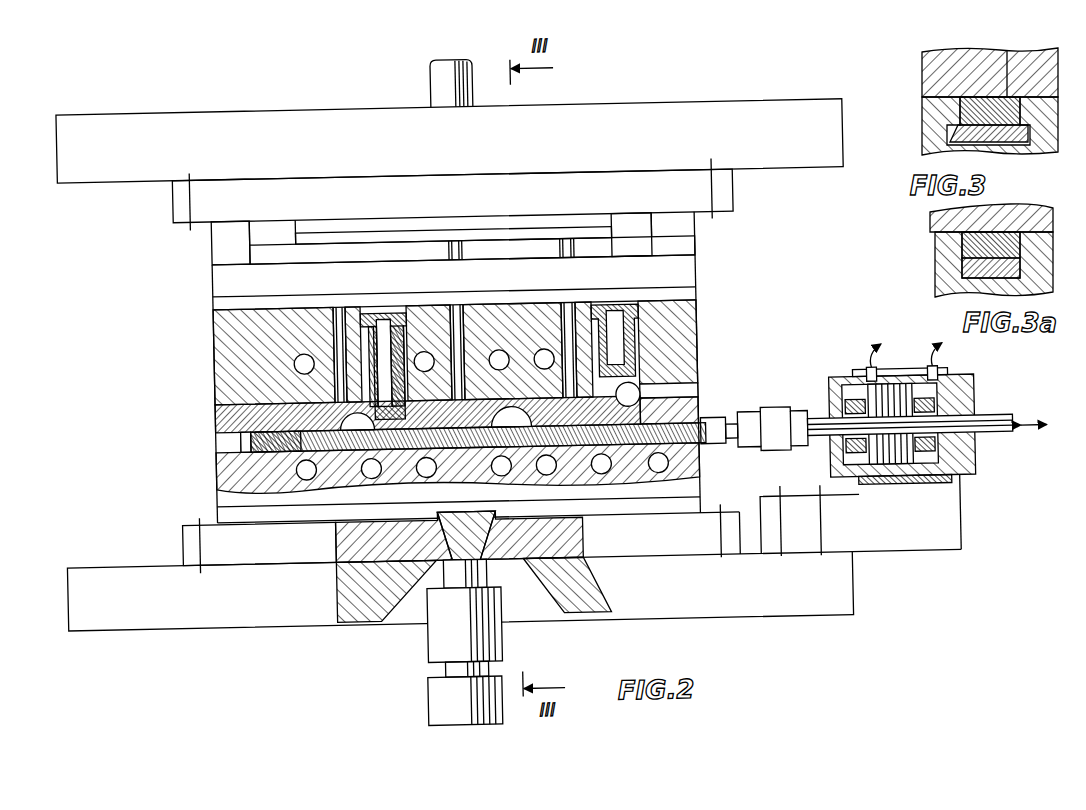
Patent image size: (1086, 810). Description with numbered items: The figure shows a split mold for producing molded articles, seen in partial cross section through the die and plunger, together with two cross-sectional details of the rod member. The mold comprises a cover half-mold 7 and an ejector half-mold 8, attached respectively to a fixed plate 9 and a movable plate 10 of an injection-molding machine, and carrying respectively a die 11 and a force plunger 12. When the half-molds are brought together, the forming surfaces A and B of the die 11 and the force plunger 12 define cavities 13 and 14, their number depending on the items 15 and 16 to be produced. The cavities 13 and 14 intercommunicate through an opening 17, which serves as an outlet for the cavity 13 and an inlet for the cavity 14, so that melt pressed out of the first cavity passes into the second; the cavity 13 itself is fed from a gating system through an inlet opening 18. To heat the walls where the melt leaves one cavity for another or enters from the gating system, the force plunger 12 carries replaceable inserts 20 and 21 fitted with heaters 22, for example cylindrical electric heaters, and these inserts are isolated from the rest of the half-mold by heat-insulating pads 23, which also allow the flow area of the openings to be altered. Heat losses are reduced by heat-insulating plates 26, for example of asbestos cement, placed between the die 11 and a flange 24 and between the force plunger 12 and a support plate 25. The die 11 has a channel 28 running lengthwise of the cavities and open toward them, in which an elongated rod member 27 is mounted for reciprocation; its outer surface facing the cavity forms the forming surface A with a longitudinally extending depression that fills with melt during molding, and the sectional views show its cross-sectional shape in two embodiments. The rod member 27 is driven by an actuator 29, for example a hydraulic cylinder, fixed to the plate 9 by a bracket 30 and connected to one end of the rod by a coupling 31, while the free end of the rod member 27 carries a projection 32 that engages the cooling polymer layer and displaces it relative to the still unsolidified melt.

In FIG. 2, the cover half-mold 7 is at (214, 505).
In FIG. 2, the ejector half-mold 8 is at (212, 216).
In FIG. 2, the fixed plate 9 is at (97, 578).
In FIG. 2, the movable plate 10 is at (218, 126).
In FIG. 2, the die 11 is at (250, 466).
In FIG. 3, the die 11 is at (930, 112).
In FIG. 3A, the die 11 is at (960, 287).
In FIG. 2, the force plunger 12 is at (231, 323).
In FIG. 3, the force plunger 12 is at (980, 65).
In FIG. 3A, the force plunger 12 is at (945, 225).
In FIG. 2, the cavity 13 is at (506, 401).
In FIG. 2, the cavity 14 is at (338, 478).
In FIG. 2, the item 15 is at (480, 396).
In FIG. 3, the item 15 is at (1000, 100).
In FIG. 3A, the item 15 is at (950, 248).
In FIG. 2, the item 16 is at (333, 393).
In FIG. 2, the opening 17 is at (376, 599).
In FIG. 2, the inlet opening 18 is at (631, 396).
In FIG. 2, the replaceable insert 20 is at (370, 316).
In FIG. 2, the replaceable insert 21 is at (672, 322).
In FIG. 2, the heater 22 is at (397, 311).
In FIG. 2, the heat-insulating pad 23 is at (426, 330).
In FIG. 2, the flange 24 is at (202, 550).
In FIG. 2, the support plate 25 is at (248, 274).
In FIG. 2, the heat-insulating plate 26 is at (698, 505).
In FIG. 2, the rod member 27 is at (704, 446).
In FIG. 3, the rod member 27 is at (1030, 150).
In FIG. 3A, the rod member 27 is at (960, 268).
In FIG. 2, the channel 28 is at (245, 436).
In FIG. 2, the actuator 29 is at (956, 481).
In FIG. 2, the bracket 30 is at (936, 550).
In FIG. 2, the coupling 31 is at (773, 419).
In FIG. 2, the projection 32 is at (263, 458).
In FIG. 2, the forming surface A is at (279, 306).
In FIG. 2, the forming surface B is at (303, 458).